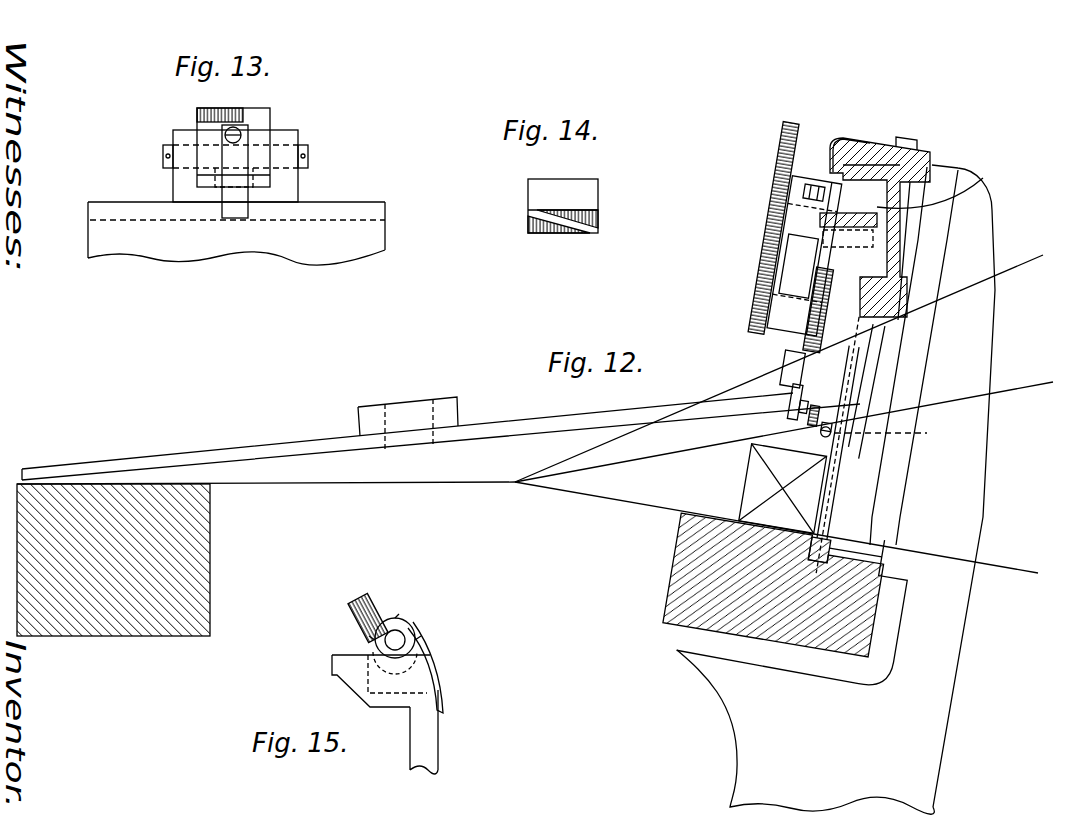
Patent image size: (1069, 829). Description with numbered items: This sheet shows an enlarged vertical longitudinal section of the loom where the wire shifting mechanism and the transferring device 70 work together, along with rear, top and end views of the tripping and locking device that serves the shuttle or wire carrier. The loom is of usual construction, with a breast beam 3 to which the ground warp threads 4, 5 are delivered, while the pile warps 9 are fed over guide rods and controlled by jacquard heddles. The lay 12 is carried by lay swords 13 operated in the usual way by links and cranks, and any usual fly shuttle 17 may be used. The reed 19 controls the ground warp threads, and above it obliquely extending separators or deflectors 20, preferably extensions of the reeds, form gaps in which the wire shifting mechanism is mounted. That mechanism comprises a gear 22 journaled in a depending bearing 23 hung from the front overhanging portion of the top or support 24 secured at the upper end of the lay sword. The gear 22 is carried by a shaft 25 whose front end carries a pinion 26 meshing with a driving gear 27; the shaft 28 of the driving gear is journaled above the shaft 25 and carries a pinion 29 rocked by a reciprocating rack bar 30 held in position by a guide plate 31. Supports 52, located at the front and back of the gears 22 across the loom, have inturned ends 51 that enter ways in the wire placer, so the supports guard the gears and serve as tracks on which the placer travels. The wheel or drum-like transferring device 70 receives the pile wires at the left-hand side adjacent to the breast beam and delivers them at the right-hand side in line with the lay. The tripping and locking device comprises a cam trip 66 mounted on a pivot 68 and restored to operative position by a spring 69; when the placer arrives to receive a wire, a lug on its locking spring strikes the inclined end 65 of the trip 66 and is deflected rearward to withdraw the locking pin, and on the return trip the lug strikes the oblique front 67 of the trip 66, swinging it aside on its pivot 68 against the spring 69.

In FIG. 12, the breast beam 3 is at (211, 547).
In FIG. 12, the ground warp thread 4 is at (776, 527).
In FIG. 12, the ground warp thread 5 is at (784, 432).
In FIG. 12, the pile warps 9 is at (779, 368).
In FIG. 12, the lay 12 is at (697, 567).
In FIG. 12, the lay swords 13 is at (935, 738).
In FIG. 12, the fly shuttle 17 is at (752, 482).
In FIG. 12, the reed 19 is at (836, 490).
In FIG. 12, the separators or deflectors 20 is at (866, 338).
In FIG. 12, the gear 22 is at (900, 264).
In FIG. 12, the depending bearing 23 is at (768, 264).
In FIG. 12, the top or support 24 is at (918, 147).
In FIG. 12, the shaft 25 is at (762, 338).
In FIG. 12, the pinion 26 is at (752, 308).
In FIG. 12, the driving gear 27 is at (786, 200).
In FIG. 12, the shaft 28 is at (801, 180).
In FIG. 12, the pinion 29 is at (944, 185).
In FIG. 12, the rack bar 30 is at (872, 140).
In FIG. 12, the guide plate 31 is at (846, 139).
In FIG. 12, the inturned ends 51 is at (797, 379).
In FIG. 12, the supports 52 is at (800, 349).
In FIG. 13, the inclined end 65 is at (208, 108).
In FIG. 14, the inclined end 65 is at (600, 220).
In FIG. 15, the inclined end 65 is at (374, 598).
In FIG. 12, the inclined end 65 is at (845, 412).
In FIG. 13, the cam trip 66 is at (270, 118).
In FIG. 14, the cam trip 66 is at (540, 210).
In FIG. 14, the oblique front 67 is at (532, 218).
In FIG. 13, the pivot 68 is at (308, 153).
In FIG. 15, the pivot 68 is at (400, 640).
In FIG. 12, the pivot 68 is at (818, 437).
In FIG. 13, the spring 69 is at (233, 208).
In FIG. 15, the spring 69 is at (441, 670).
In FIG. 12, the spring 69 is at (893, 434).
In FIG. 12, the transferring device 70 is at (305, 437).